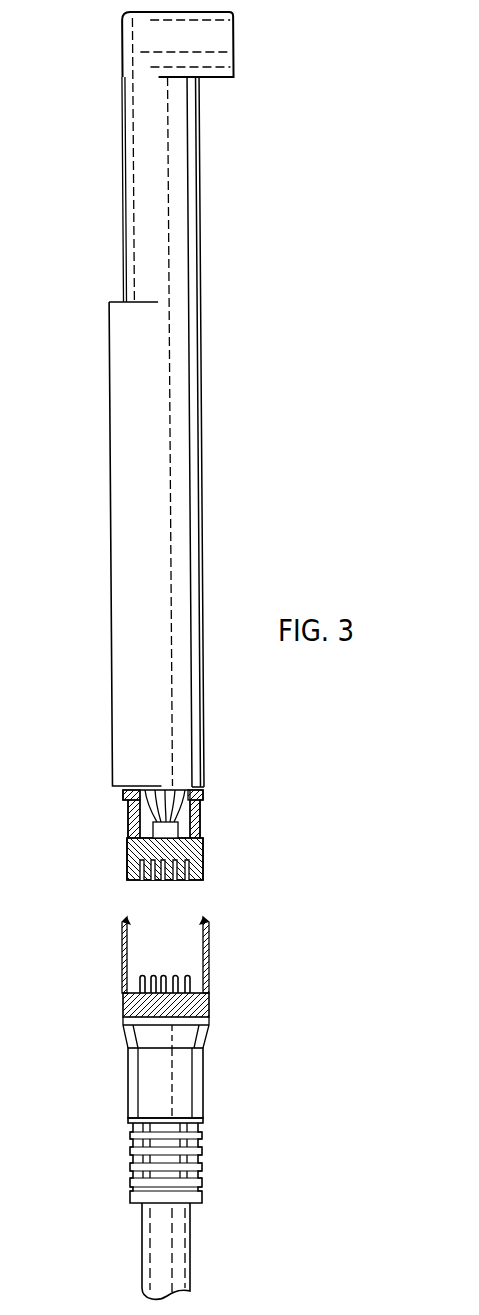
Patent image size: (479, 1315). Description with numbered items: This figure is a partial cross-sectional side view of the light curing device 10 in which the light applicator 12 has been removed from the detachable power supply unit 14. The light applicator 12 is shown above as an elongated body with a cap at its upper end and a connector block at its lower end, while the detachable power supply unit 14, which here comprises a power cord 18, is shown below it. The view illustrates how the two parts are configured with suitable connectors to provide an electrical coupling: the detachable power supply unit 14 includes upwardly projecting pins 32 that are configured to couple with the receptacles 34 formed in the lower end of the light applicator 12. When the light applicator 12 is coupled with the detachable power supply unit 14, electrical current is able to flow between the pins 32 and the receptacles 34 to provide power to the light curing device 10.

The light curing device 10 is at (215, 456).
The light applicator 12 is at (206, 456).
The detachable power supply unit 14 is at (167, 1101).
The power cord 18 is at (165, 1097).
The pins 32 is at (162, 968).
The receptacles 34 is at (171, 890).